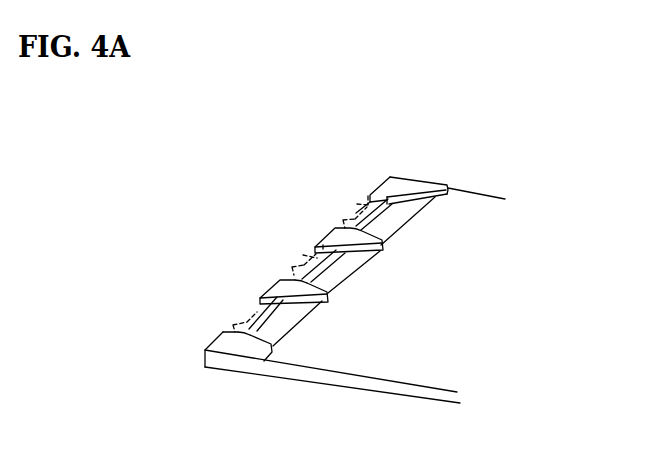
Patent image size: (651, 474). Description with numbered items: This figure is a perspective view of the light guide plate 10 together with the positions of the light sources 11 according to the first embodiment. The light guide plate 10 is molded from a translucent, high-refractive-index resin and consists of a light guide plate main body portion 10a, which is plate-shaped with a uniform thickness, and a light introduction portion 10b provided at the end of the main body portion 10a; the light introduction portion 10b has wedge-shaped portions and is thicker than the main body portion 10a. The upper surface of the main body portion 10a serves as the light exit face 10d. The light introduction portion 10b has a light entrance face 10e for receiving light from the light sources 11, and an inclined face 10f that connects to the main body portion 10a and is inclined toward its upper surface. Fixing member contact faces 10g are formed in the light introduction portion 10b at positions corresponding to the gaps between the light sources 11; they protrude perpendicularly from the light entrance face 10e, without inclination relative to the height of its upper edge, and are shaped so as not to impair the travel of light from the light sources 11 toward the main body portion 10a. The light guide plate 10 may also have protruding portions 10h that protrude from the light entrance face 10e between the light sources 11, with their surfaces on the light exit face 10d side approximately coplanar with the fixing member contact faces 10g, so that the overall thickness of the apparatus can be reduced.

The light guide plate 10 is at (522, 177).
The light guide plate main body portion 10a is at (498, 447).
The light introduction portion 10b is at (250, 396).
The light exit face 10d is at (492, 218).
The light entrance face 10e is at (366, 203).
The inclined face 10f is at (259, 304).
The fixing member contact faces 10g is at (362, 230).
The protruding portions 10h is at (282, 281).
The light sources 11 is at (303, 257).